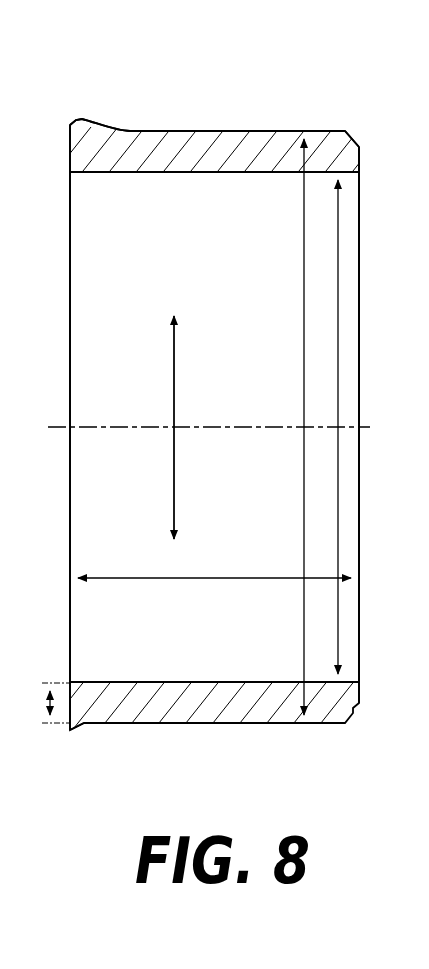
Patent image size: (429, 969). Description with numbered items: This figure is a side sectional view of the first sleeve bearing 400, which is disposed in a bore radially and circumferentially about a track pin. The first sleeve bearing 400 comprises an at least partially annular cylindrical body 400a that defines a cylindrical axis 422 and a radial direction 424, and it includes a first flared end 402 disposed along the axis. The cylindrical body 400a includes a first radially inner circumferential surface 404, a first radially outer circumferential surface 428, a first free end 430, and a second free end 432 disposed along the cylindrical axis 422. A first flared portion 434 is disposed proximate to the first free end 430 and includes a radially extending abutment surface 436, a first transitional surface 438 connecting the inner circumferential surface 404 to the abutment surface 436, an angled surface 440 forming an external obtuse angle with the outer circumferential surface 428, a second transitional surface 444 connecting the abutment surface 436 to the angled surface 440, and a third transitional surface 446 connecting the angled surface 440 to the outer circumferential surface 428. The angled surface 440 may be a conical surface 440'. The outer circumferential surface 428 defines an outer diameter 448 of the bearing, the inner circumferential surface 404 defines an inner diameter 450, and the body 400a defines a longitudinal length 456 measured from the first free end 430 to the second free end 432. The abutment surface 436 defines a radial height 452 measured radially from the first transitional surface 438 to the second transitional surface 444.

The first sleeve bearing 400 is at (205, 84).
The at least partially annular cylindrical body 400a is at (266, 150).
The first flared end 402 is at (95, 142).
The first radially inner circumferential surface 404 is at (268, 324).
The cylindrical axis 422 is at (325, 428).
The radial direction 424 is at (174, 395).
The first radially outer circumferential surface 428 is at (160, 130).
The first free end 430 is at (62, 705).
The second free end 432 is at (358, 388).
The first flared portion 434 is at (66, 113).
The radially extending abutment surface 436 is at (70, 149).
The first transitional surface 438 is at (75, 680).
The angled surface 440 is at (106, 88).
The conical surface 440' is at (142, 680).
The second transitional surface 444 is at (72, 730).
The third transitional surface 446 is at (143, 723).
The outer diameter 448 is at (305, 190).
The inner diameter 450 is at (338, 277).
The radial height 452 is at (50, 708).
The longitudinal length 456 is at (318, 582).